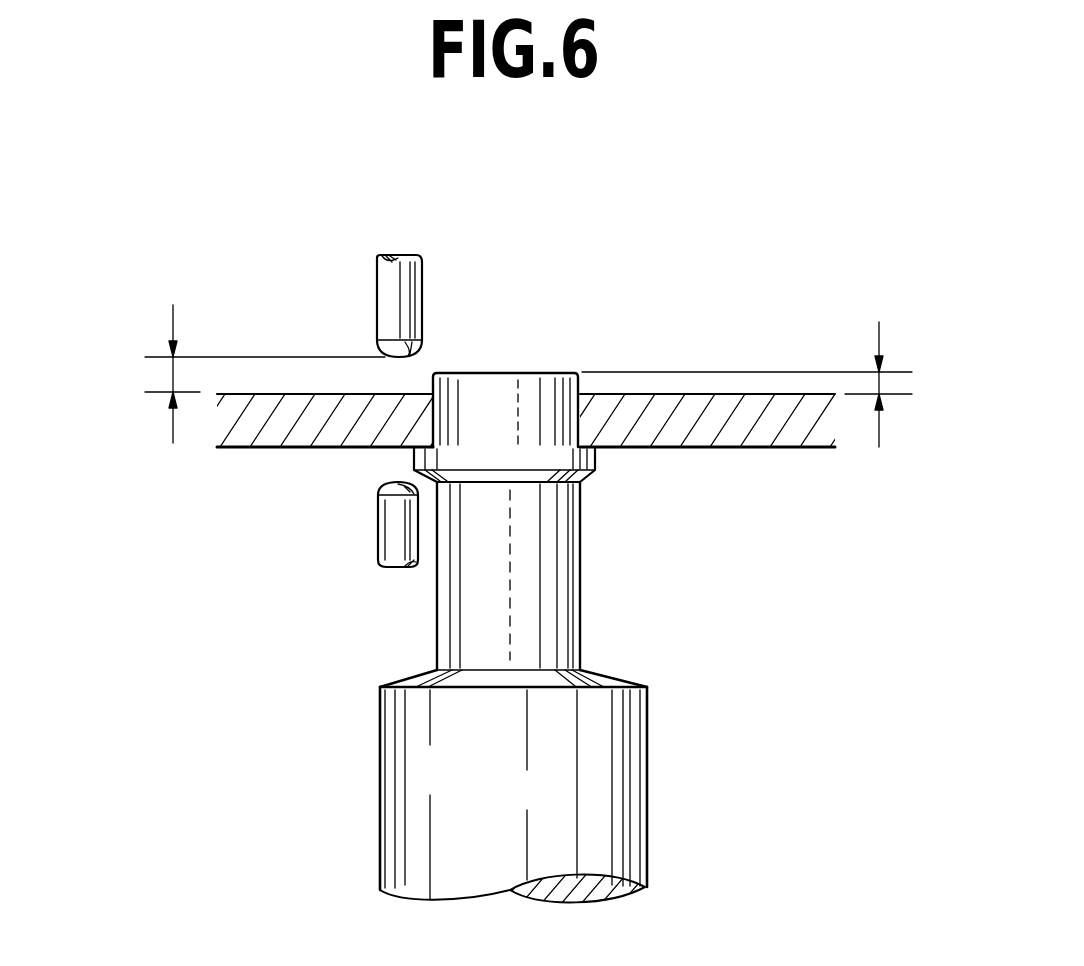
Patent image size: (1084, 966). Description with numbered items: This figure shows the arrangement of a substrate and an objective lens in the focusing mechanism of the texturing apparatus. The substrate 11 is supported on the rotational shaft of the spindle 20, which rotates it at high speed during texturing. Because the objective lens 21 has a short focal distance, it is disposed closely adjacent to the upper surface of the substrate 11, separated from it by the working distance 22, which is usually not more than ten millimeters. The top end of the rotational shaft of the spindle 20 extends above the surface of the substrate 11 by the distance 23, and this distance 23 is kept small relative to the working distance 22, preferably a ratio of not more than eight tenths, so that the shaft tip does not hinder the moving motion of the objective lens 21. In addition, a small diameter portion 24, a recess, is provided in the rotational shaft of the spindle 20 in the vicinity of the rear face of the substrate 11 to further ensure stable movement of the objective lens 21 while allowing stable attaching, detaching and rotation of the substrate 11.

The substrate 11 is at (771, 437).
The spindle 20 is at (597, 790).
The objective lens 21 is at (422, 357).
The working distance 22 is at (173, 376).
The distance between the upper surface of the substrate and the top end of the rotat 23 is at (883, 382).
The small diameter portion 24 is at (580, 583).